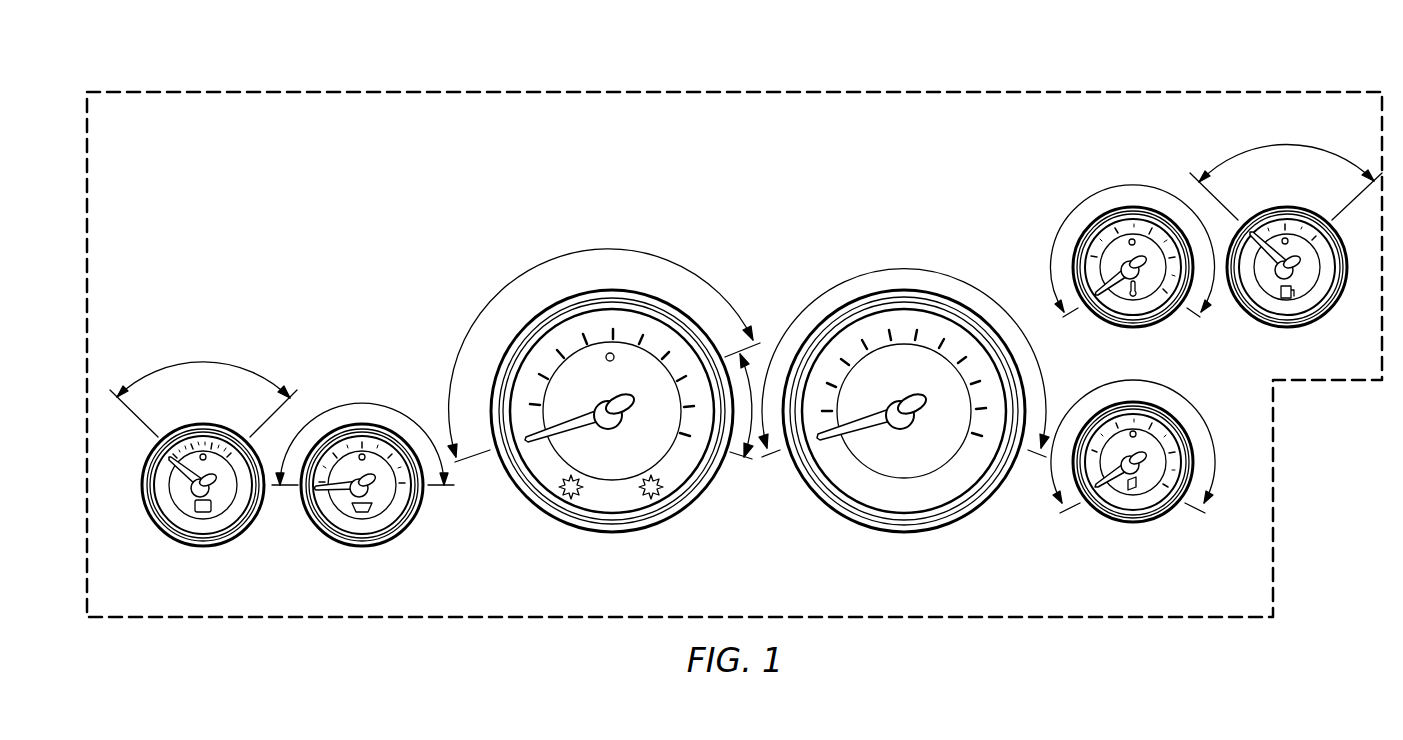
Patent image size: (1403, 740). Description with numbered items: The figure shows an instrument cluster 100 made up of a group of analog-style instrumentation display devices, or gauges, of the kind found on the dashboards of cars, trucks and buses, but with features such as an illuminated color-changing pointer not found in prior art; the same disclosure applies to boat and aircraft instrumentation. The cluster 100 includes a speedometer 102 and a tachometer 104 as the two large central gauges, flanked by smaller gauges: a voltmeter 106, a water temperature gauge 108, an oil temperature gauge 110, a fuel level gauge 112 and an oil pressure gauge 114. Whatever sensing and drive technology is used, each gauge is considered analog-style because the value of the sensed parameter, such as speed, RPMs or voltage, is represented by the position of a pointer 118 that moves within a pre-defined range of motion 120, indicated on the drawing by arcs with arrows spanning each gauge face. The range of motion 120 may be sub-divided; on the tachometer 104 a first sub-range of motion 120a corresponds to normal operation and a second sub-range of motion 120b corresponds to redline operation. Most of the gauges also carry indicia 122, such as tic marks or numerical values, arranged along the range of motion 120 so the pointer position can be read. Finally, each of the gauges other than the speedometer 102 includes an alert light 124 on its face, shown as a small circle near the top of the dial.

The instrument cluster 100 is at (232, 90).
The speedometer 102 is at (922, 532).
The tachometer 104 is at (583, 531).
The voltmeter 106 is at (165, 533).
The water temperature gauge 108 is at (359, 547).
The oil temperature gauge 110 is at (1176, 309).
The fuel level gauge 112 is at (1320, 320).
The oil pressure gauge 114 is at (1147, 521).
The pointer 118 is at (169, 466).
The range of motion 120 is at (178, 366).
The first sub-range of motion 120a is at (486, 308).
The second sub-range of motion 120b is at (748, 372).
The indicia 122 is at (184, 438).
The alert light 124 is at (204, 453).